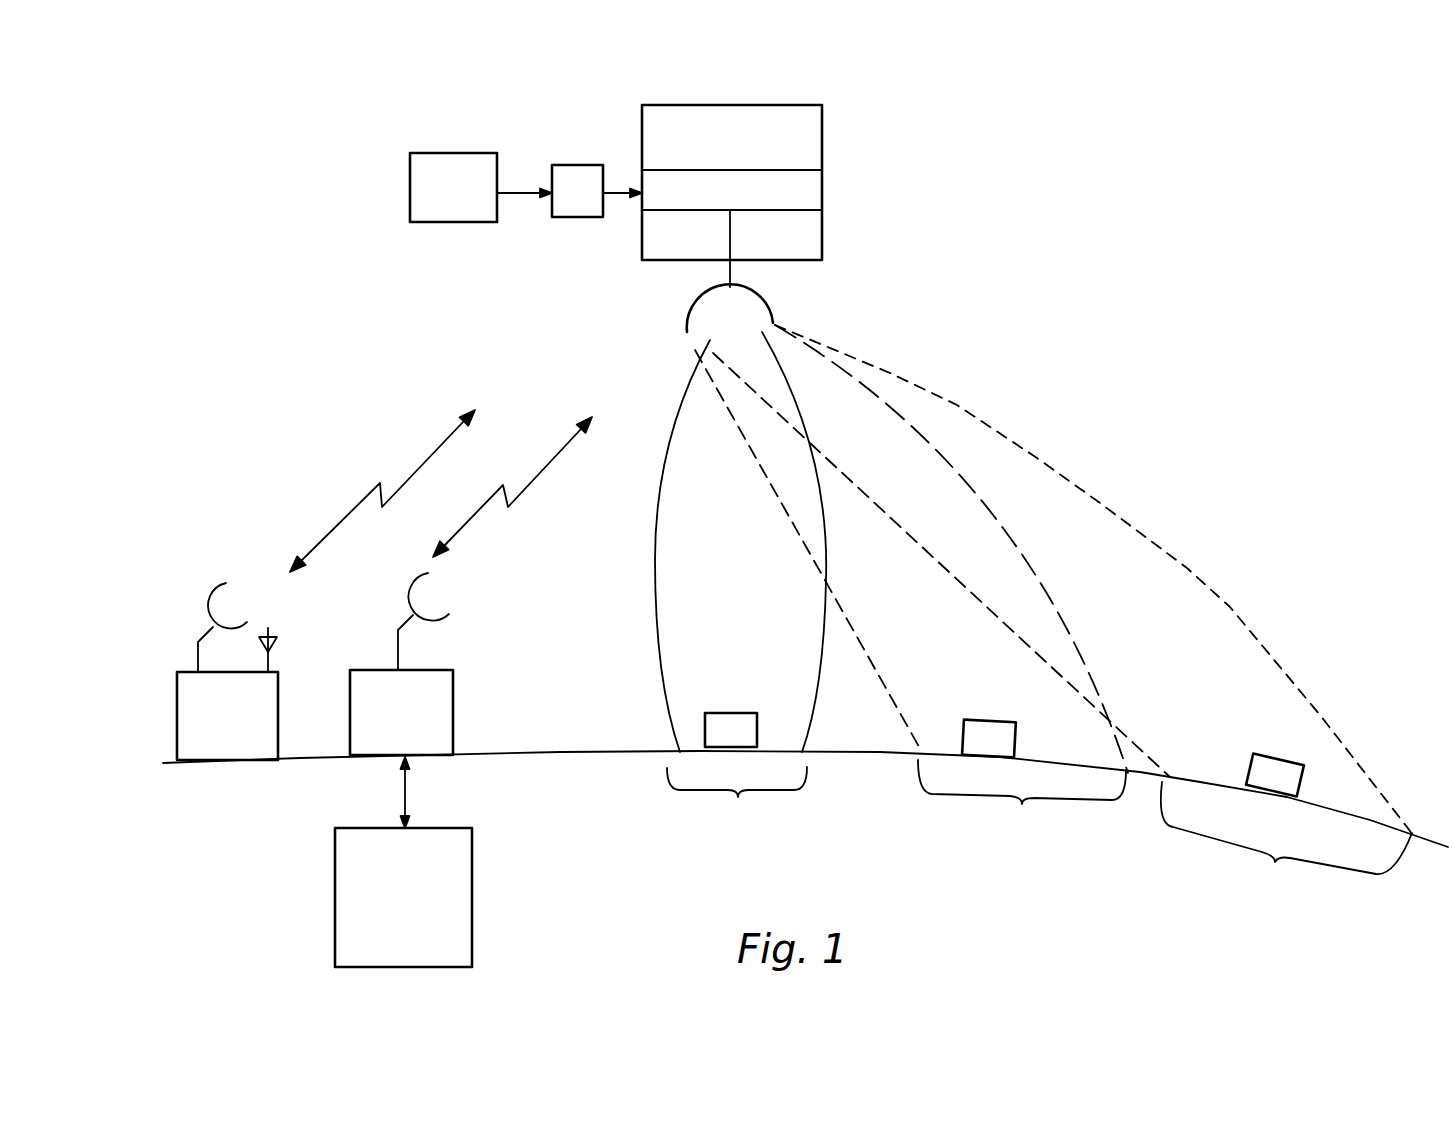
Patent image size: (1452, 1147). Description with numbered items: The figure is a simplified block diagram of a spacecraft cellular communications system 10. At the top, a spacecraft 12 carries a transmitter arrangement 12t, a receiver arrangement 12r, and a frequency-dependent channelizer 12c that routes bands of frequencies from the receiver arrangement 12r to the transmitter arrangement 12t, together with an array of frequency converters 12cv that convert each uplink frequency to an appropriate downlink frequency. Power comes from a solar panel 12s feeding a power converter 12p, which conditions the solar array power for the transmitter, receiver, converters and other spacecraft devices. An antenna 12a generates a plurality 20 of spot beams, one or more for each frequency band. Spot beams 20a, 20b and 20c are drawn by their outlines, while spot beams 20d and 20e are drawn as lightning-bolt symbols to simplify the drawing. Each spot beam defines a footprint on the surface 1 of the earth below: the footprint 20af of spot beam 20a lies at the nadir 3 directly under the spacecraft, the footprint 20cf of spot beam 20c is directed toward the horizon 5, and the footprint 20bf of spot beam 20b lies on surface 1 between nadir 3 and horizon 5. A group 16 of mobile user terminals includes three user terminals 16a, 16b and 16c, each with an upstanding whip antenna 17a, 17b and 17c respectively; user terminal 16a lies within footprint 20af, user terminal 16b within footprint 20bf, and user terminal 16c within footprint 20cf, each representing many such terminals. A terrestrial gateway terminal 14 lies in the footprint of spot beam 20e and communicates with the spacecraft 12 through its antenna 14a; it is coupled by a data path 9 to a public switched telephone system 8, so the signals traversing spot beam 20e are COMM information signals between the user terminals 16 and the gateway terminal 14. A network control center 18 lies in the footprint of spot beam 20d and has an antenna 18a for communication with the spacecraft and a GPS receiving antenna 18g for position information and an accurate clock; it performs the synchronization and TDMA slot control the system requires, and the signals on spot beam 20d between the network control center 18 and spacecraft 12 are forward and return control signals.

The surface of the earth 1 is at (567, 752).
The nadir 3 is at (743, 752).
The horizon 5 is at (1427, 845).
The public switched telephone system 8 is at (472, 900).
The data path 9 is at (405, 798).
The spacecraft cellular communications system 10 is at (501, 292).
The spacecraft 12 is at (562, 133).
The antenna 12a is at (773, 323).
The frequency-dependent channelizer 12c is at (822, 190).
The frequency converters 12cv is at (822, 148).
The power converter 12p is at (553, 165).
The receiver arrangement 12r is at (822, 232).
The solar panel 12s is at (453, 153).
The transmitter arrangement 12t is at (642, 240).
The gateway terminal 14 is at (352, 670).
The antenna 14a is at (407, 590).
The group of mobile terrestrial user terminals 16 is at (1210, 534).
The user terminal 16a is at (757, 730).
The user terminal 16b is at (1015, 745).
The user terminal 16c is at (1300, 790).
The whip antenna 17a is at (730, 713).
The whip antenna 17b is at (990, 720).
The whip antenna 17c is at (1280, 754).
The network control center 18 is at (177, 672).
The antenna 18a is at (207, 600).
The GPS receiving antenna 18g is at (268, 628).
The plurality of spot beams 20 is at (1065, 442).
The spot beam 20a is at (652, 602).
The footprint 20af is at (737, 802).
The spot beam 20b is at (845, 615).
The footprint 20bf is at (1022, 801).
The spot beam 20c is at (1225, 605).
The footprint 20cf is at (1286, 841).
The spot beam 20d is at (366, 497).
The spot beam 20e is at (528, 489).